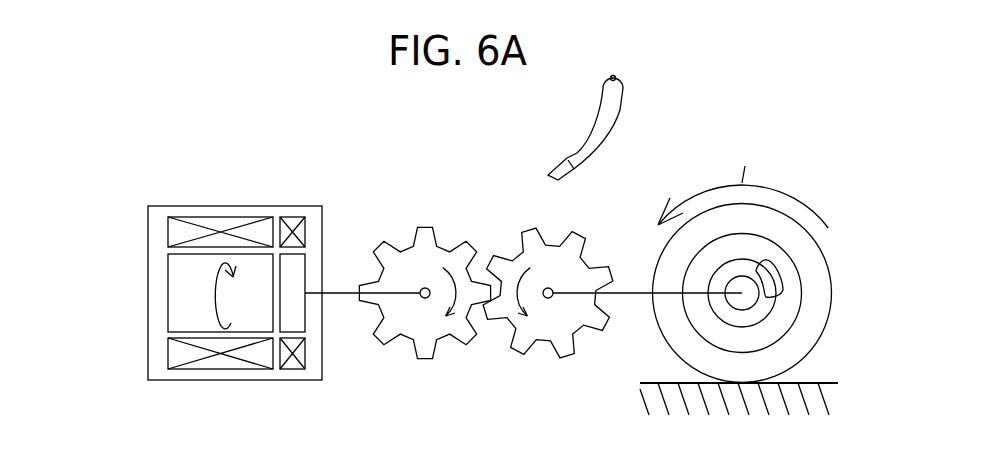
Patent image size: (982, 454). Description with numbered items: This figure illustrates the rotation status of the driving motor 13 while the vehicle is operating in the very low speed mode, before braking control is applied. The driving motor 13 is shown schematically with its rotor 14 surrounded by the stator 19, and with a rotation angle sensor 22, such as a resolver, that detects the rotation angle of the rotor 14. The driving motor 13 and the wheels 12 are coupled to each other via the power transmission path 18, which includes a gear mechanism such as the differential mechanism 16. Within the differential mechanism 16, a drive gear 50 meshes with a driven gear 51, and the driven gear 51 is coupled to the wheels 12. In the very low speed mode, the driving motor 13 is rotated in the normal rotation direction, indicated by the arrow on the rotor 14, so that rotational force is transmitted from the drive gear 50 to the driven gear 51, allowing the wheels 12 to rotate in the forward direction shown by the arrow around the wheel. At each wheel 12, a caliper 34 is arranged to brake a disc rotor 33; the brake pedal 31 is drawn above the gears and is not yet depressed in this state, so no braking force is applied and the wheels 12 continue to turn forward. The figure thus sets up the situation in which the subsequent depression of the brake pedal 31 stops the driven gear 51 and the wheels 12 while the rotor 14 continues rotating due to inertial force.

The wheel 12 is at (768, 259).
The driving motor 13 is at (172, 209).
The rotor 14 is at (207, 297).
The differential mechanism 16 is at (424, 282).
The power transmission path 18 is at (491, 195).
The stator 19 is at (223, 219).
The rotation angle sensor 22 is at (296, 217).
The brake pedal 31 is at (593, 130).
The disc rotor 33 is at (758, 315).
The caliper 34 is at (777, 285).
The drive gear 50 is at (425, 358).
The driven gear 51 is at (558, 340).